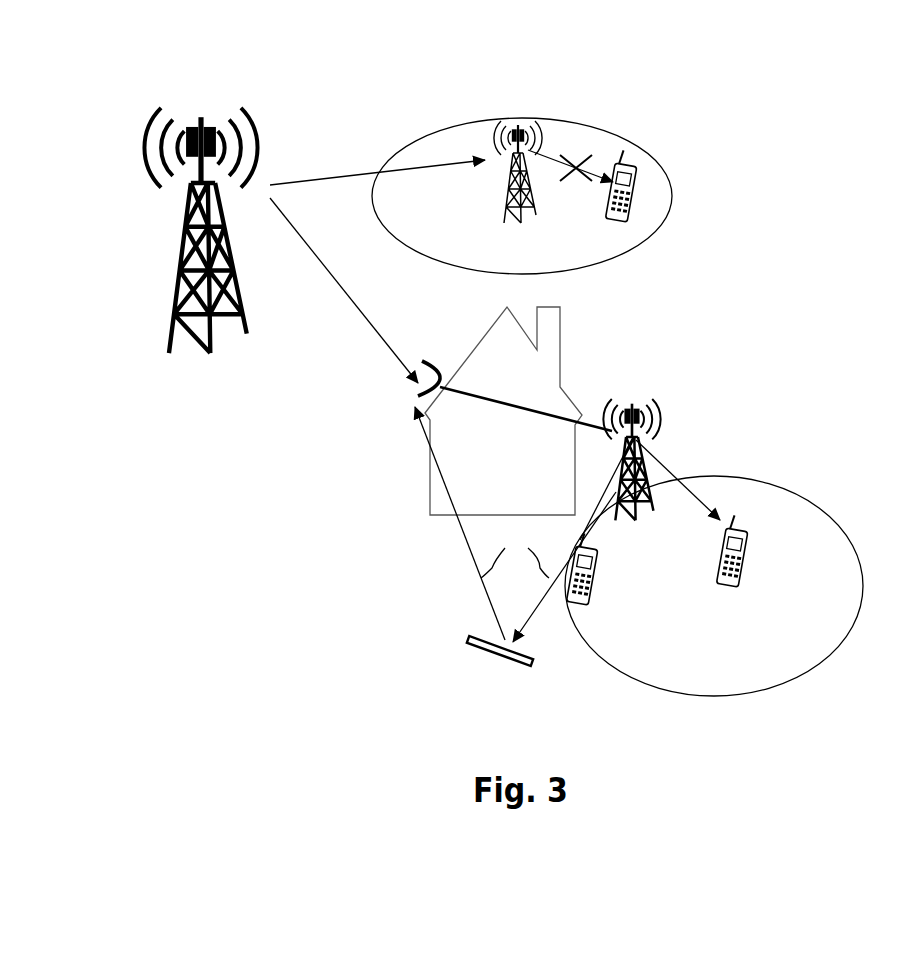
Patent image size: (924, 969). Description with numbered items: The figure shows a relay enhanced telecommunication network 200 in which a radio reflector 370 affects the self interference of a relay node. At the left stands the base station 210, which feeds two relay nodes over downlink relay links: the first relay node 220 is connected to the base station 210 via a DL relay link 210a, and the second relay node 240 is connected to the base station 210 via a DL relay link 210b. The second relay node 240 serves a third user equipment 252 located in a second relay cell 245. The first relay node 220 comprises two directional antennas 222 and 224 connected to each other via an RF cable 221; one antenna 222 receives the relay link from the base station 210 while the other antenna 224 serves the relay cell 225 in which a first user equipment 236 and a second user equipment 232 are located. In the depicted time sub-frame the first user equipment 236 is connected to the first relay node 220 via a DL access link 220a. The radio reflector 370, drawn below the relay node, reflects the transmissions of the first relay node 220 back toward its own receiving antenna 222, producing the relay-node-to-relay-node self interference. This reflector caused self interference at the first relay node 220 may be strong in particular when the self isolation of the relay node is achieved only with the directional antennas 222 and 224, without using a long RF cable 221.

The relay enhanced telecommunication network 200 is at (843, 133).
The base station 210 is at (172, 310).
The DL relay link 210a is at (357, 302).
The DL relay link 210b is at (343, 172).
The first relay node 220 is at (653, 458).
The DL access link 220a is at (695, 495).
The RF cable 221 is at (510, 405).
The antenna 222 is at (430, 360).
The antenna 224 is at (637, 405).
The relay cell 225 is at (806, 490).
The second UE 232 is at (610, 586).
The first UE 236 is at (755, 556).
The second RN 240 is at (507, 197).
The second relay cell 245 is at (592, 125).
The third UE 252 is at (657, 166).
The radio reflector 370 is at (500, 665).